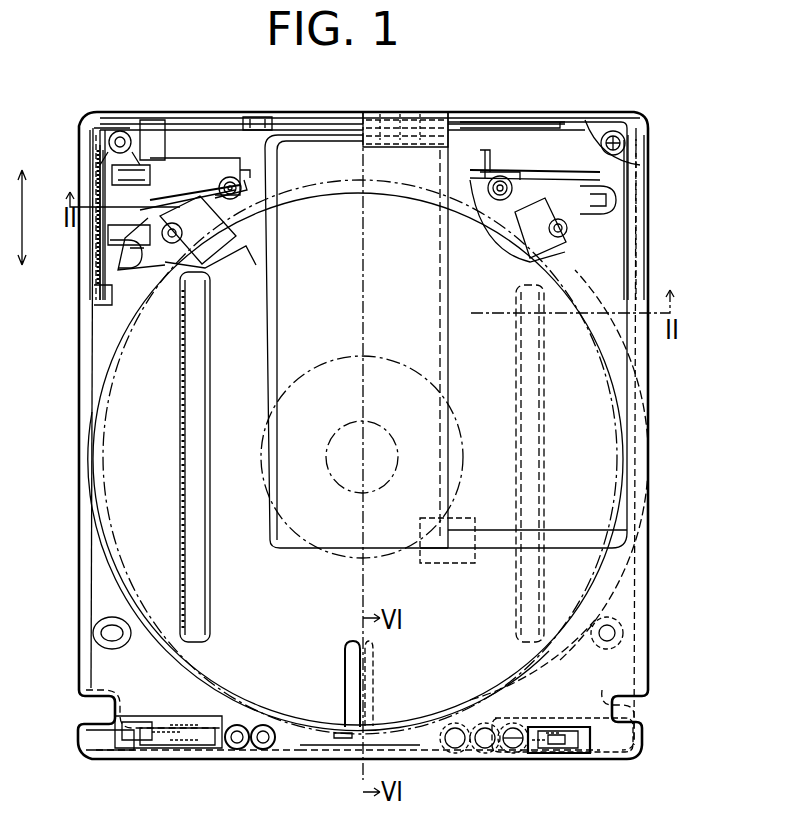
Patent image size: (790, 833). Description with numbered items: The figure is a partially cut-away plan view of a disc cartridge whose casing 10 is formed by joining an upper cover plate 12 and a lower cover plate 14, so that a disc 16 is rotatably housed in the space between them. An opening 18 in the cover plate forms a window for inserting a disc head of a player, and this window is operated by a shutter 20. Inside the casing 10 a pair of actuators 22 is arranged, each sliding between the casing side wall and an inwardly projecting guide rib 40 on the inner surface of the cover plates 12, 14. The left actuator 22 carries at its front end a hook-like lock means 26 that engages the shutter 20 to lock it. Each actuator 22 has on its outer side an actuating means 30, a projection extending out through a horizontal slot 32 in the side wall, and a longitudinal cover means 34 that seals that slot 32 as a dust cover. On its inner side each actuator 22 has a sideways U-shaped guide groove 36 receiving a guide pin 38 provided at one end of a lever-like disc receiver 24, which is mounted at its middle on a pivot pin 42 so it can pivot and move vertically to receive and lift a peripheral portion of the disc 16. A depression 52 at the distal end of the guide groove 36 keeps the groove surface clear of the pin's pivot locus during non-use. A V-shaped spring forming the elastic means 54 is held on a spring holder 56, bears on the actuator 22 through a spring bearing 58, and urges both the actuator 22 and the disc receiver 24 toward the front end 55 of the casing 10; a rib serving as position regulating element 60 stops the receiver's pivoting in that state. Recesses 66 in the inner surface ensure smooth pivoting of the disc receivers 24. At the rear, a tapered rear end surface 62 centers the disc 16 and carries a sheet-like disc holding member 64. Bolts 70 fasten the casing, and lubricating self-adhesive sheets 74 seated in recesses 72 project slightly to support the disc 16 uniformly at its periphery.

The casing 10 is at (667, 112).
The upper cover plate 12 is at (642, 602).
The lower cover plate 14 is at (92, 322).
The disc 16 is at (93, 513).
The opening 18 is at (405, 112).
The shutter 20 is at (275, 135).
The actuators 22 is at (140, 125).
The disc receivers 24 is at (228, 247).
The lock means 26 is at (152, 120).
The actuating means 30 is at (94, 186).
The slot 32 is at (96, 265).
The cover means 34 is at (100, 135).
The guide groove 36 is at (110, 236).
The guide pin 38 is at (172, 245).
The guide rib 40 is at (175, 222).
The pivot pin 42 is at (545, 214).
The depression 52 is at (116, 130).
The elastic means 54 is at (230, 176).
The front end 55 is at (328, 118).
The spring holder 56 is at (505, 128).
The spring bearing 58 is at (115, 172).
The position regulating element 60 is at (232, 158).
The rear end surface 62 is at (345, 748).
The disc holding member 64 is at (345, 672).
The recesses 66 is at (215, 264).
The bolts 70 is at (612, 131).
The recesses 72 is at (180, 478).
The lubricating, self-adhesive sheets 74 is at (180, 438).